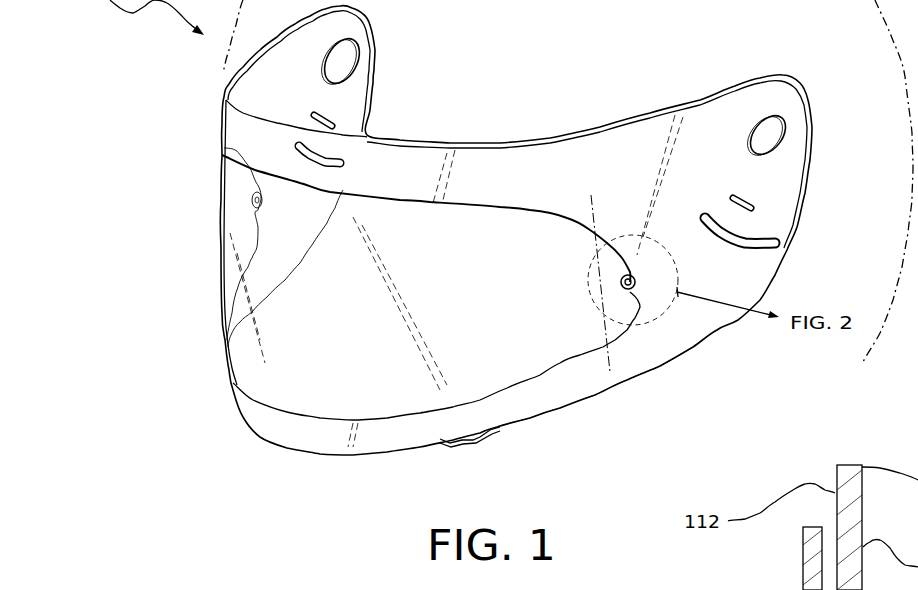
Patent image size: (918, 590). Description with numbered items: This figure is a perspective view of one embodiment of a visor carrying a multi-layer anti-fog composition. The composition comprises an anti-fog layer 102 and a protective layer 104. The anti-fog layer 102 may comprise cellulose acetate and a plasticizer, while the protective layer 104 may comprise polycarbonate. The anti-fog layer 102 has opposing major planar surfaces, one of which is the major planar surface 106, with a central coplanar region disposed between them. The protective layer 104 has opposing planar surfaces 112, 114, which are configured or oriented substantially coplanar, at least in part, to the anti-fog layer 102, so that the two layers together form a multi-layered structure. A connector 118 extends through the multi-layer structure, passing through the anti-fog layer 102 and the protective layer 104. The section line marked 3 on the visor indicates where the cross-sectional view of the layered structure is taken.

The visor shield body 102 is at (507, 380).
The lower edge of visor 104 is at (586, 390).
The lip on lower edge 106 is at (453, 363).
The upper band of visor 112 is at (592, 157).
The top rim edge 114 is at (567, 140).
The pivot pin 118 is at (640, 280).
The section line for FIG. 3 is at (582, 210).